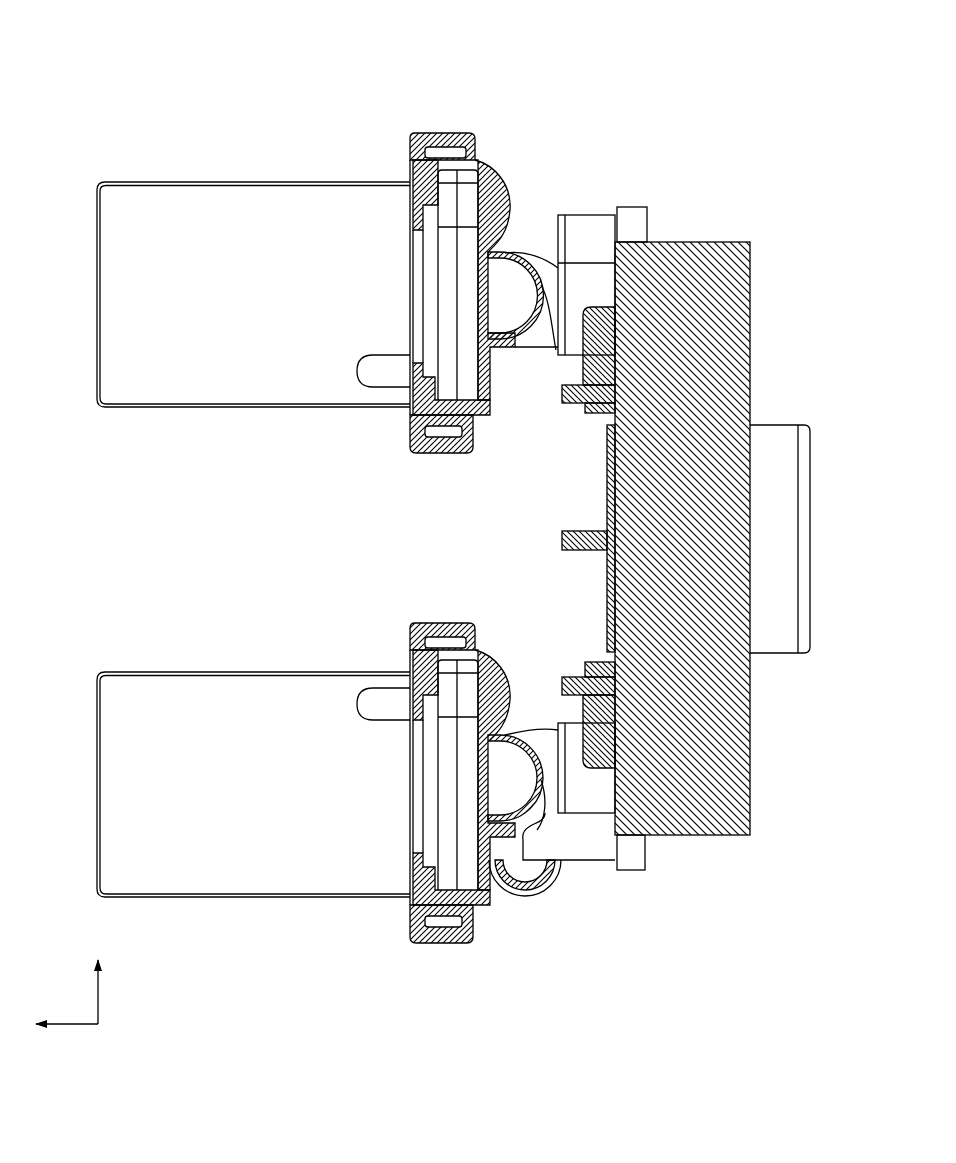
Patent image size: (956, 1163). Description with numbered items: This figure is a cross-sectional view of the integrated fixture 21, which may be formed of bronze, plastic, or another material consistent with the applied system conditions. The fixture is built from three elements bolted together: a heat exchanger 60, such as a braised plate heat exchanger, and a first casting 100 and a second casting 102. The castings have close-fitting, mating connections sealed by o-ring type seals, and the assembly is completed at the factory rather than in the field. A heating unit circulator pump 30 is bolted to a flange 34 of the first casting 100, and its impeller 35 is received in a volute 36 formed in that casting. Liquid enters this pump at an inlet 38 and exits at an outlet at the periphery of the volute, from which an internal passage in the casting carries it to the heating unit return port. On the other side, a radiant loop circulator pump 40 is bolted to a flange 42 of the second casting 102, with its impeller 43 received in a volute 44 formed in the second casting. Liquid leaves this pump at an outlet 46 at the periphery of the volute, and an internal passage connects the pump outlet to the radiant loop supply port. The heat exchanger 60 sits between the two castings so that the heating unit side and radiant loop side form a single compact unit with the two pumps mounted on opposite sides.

The integrated fixture 21 is at (135, 45).
The first casting 100 is at (303, 130).
The second casting 102 is at (303, 640).
The radiant loop circulator pump 40 is at (167, 198).
The heating unit circulator pump 30 is at (167, 688).
The outlet 46 is at (492, 142).
The volute 36 is at (462, 678).
The volute 44 is at (465, 203).
The impeller 35 is at (462, 738).
The impeller 43 is at (462, 290).
The flange 42 is at (445, 453).
The flange 34 is at (445, 943).
The inlet 38 is at (552, 908).
The heat exchanger 60 is at (742, 720).